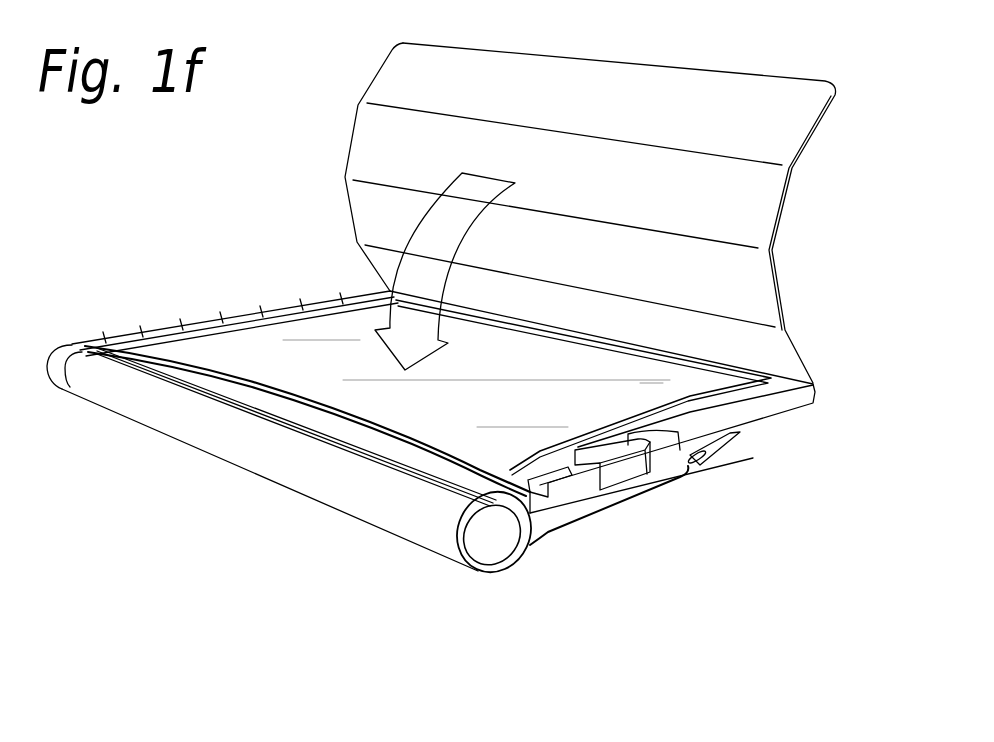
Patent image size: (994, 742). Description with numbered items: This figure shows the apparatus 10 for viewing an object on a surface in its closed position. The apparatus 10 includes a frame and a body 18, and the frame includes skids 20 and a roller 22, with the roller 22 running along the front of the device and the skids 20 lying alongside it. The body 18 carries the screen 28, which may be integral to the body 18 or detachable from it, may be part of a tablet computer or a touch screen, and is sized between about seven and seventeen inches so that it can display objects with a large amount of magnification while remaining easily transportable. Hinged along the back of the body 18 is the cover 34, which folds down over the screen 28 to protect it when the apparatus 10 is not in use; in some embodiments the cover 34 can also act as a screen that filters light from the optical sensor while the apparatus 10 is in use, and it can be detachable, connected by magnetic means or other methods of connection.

The apparatus 10 is at (139, 452).
The body 18 is at (758, 412).
The skids 20 is at (573, 515).
The roller 22 is at (325, 483).
The screen 28 is at (235, 348).
The cover 34 is at (763, 232).